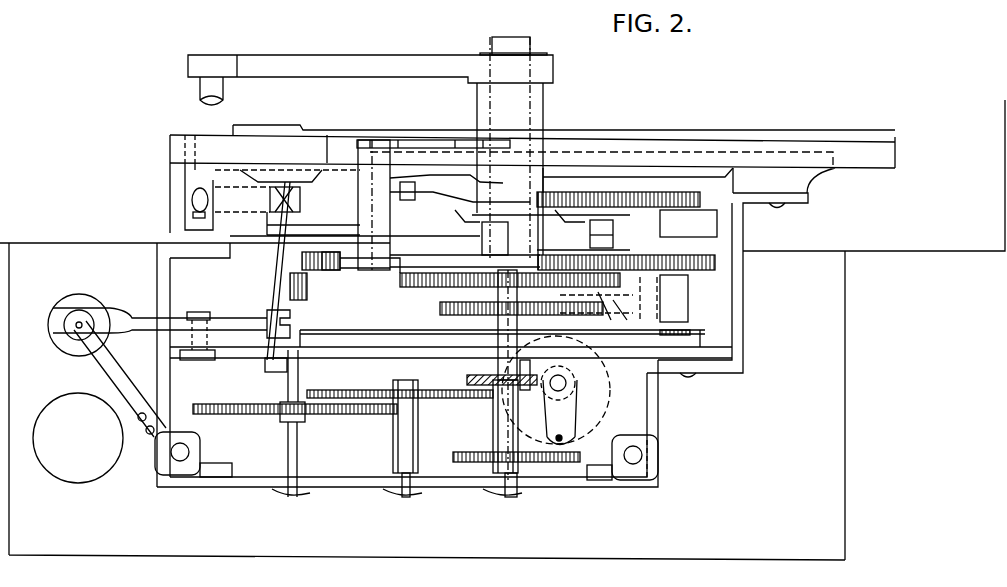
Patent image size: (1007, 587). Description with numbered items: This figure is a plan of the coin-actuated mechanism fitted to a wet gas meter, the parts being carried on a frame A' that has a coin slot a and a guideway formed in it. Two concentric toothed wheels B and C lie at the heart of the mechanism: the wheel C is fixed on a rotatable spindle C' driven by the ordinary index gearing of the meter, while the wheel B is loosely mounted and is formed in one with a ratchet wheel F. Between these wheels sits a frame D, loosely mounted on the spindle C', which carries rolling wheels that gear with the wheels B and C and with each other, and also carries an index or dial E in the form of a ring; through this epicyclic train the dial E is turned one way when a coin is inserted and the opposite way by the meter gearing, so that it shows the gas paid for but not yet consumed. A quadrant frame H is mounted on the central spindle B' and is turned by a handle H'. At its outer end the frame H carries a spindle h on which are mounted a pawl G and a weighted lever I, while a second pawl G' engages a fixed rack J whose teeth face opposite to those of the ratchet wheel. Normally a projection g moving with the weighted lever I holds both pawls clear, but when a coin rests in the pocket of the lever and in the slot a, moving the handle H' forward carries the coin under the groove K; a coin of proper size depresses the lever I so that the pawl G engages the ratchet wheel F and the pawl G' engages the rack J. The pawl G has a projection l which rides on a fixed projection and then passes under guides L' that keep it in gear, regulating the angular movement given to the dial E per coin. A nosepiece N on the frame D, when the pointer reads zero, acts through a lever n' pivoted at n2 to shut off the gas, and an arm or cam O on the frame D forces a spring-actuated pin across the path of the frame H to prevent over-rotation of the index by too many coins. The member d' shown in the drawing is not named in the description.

The handle H' is at (370, 81).
The central spindle B' is at (529, 147).
The coin slot a is at (422, 145).
The weighted lever I is at (486, 173).
The projection g is at (545, 180).
The fixed rack J is at (615, 192).
The groove K is at (668, 152).
The second pawl G' is at (616, 187).
The quadrant frame H is at (381, 185).
The roller d' is at (177, 205).
The spindle h is at (360, 202).
The pawl G is at (510, 231).
The projection l is at (495, 238).
The guides L' is at (638, 272).
The frame A' is at (466, 340).
The pivot n2 is at (200, 312).
The arm or cam O is at (283, 288).
The toothed wheel B is at (461, 277).
The frame D is at (502, 325).
The ratchet wheel F is at (695, 272).
The rotatable spindle C' is at (521, 317).
The lever n' is at (169, 329).
The nosepiece N is at (310, 332).
The index or dial E is at (387, 334).
The toothed wheel C is at (487, 383).